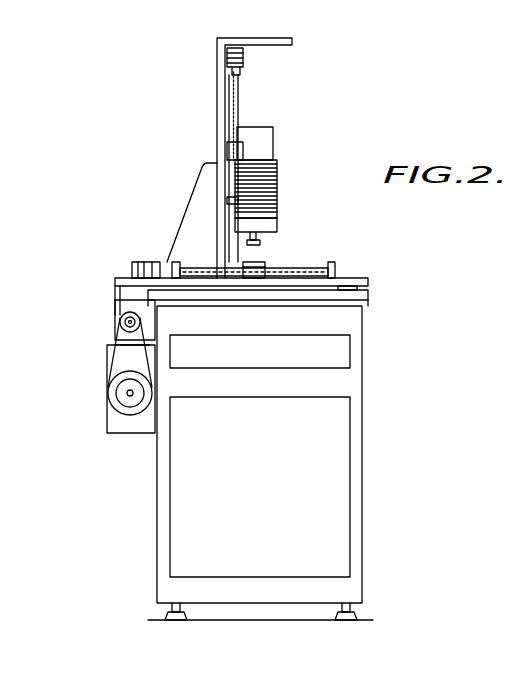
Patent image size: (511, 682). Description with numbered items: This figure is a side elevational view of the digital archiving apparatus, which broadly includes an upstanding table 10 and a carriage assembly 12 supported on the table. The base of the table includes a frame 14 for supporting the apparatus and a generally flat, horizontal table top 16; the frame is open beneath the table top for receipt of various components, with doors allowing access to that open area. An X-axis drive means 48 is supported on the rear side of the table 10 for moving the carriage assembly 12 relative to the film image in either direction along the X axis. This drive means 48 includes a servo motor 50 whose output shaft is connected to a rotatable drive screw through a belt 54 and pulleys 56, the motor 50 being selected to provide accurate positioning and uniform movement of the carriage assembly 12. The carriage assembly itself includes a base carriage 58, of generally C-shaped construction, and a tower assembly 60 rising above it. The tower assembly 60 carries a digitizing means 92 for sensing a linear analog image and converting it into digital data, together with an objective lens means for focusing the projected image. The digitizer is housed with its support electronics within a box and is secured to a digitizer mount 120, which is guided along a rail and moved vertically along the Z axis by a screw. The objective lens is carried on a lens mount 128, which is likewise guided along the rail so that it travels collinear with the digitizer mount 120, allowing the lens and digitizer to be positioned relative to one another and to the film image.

The table 10 is at (375, 385).
The carriage assembly 12 is at (311, 66).
The frame 14 is at (362, 522).
The table top 16 is at (364, 296).
The X-axis drive means 48 is at (106, 287).
The servo motor 50 is at (122, 433).
The belt 54 is at (110, 345).
The pulleys 56 is at (119, 320).
The base carriage 58 is at (373, 272).
The tower assembly 60 is at (207, 136).
The digitizing means 92 is at (288, 120).
The digitizer mount 120 is at (277, 150).
The lens mount 128 is at (276, 227).